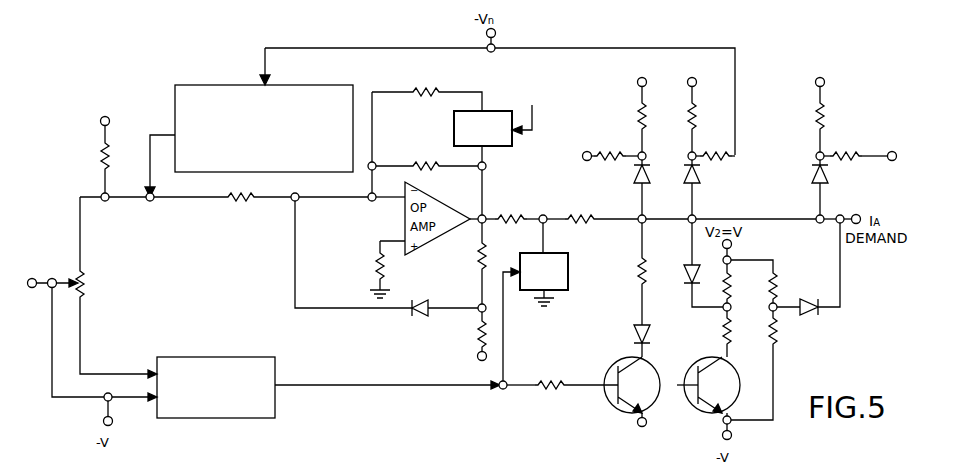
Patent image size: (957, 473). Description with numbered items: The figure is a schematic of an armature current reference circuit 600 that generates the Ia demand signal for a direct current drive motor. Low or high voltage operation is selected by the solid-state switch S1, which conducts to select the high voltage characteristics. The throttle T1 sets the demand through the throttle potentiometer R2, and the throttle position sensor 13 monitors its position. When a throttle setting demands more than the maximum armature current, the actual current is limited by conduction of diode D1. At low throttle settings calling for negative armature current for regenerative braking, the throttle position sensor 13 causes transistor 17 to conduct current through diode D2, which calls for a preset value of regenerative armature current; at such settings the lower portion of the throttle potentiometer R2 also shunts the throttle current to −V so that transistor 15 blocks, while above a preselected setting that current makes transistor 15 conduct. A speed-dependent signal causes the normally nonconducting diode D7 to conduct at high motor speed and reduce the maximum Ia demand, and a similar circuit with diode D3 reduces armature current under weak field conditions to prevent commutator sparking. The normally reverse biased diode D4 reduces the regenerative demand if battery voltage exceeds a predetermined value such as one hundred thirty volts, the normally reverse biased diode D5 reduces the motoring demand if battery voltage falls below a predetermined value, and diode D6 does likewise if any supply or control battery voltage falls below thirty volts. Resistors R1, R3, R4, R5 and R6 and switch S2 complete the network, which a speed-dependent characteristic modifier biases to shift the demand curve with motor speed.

The speed-dependent current demand circuit 600 is at (164, 4).
The transistor 15 is at (151, 131).
The throttle position sensor 13 is at (238, 357).
The transistor 17 is at (602, 372).
The resistor R1 is at (101, 162).
The throttle potentiometer R2 is at (87, 280).
The resistor R3 is at (414, 162).
The resistor R4 is at (406, 86).
The resistor R5 is at (478, 264).
The resistor R6 is at (474, 333).
The diode D1 is at (417, 299).
The diode D2 is at (636, 326).
The diode D3 is at (634, 180).
The diode D4 is at (806, 298).
The diode D5 is at (682, 272).
The diode D6 is at (828, 179).
The diode D7 is at (707, 179).
The solid-state switch S1 is at (454, 128).
The switch S2 is at (568, 258).
The throttle T1 is at (51, 275).